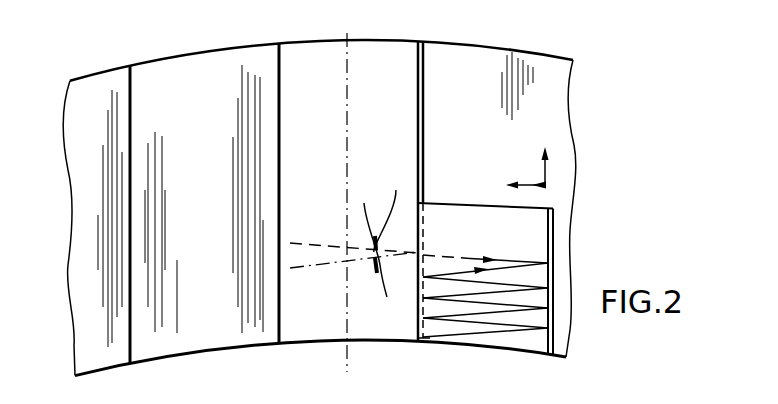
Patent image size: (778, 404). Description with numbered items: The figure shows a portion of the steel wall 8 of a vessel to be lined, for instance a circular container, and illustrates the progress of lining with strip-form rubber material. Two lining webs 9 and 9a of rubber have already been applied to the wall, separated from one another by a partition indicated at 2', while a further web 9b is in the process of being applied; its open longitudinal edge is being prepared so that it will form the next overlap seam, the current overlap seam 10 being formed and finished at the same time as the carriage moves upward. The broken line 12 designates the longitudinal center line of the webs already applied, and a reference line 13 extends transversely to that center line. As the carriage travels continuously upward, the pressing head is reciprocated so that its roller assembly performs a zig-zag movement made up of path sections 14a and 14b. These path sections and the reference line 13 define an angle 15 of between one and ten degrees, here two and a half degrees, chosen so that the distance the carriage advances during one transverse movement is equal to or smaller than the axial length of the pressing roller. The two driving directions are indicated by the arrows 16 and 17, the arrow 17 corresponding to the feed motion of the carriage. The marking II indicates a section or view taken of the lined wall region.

The steel wall 8 is at (92, 66).
The partition wall 2' is at (207, 182).
The lining web 9 is at (216, 179).
The lining web 9a is at (327, 174).
The web 9b is at (492, 240).
The overlap seam 10 is at (420, 222).
The longitudinal center line 12 is at (348, 113).
The reference line 13 is at (302, 272).
The path section 14a is at (455, 322).
The path section 14b is at (505, 315).
The angle 15 is at (376, 235).
The driving direction arrow 16 is at (527, 182).
The feed motion arrow 17 is at (548, 168).
The section indicator II is at (553, 228).